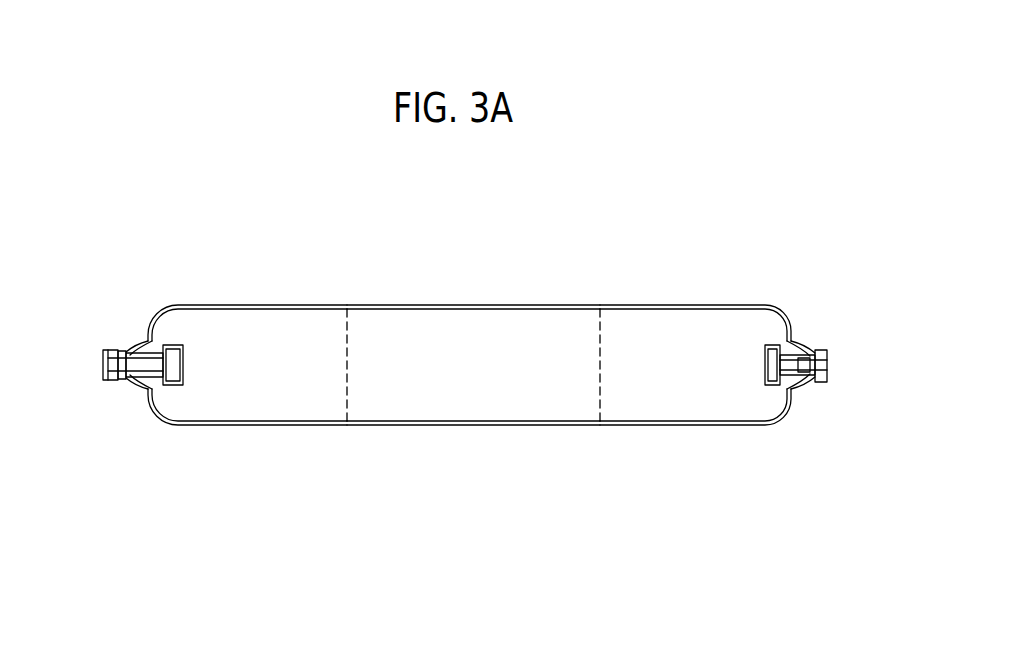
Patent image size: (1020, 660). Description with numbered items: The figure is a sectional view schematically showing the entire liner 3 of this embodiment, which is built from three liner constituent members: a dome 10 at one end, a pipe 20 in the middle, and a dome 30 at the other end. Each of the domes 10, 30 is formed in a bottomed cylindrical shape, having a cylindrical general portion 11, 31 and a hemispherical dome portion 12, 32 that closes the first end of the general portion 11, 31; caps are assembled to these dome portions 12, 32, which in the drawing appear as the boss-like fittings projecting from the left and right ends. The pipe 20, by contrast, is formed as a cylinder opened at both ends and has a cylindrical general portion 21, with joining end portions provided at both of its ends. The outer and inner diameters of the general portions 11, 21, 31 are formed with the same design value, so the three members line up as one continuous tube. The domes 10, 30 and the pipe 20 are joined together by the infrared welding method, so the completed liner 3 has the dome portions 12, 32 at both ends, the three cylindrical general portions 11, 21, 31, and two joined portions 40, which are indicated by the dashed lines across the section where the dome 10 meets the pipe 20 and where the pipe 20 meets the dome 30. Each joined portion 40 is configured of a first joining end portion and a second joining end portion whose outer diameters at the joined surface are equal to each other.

The liner 3 is at (665, 252).
The dome 10 is at (286, 330).
The general portion 11 is at (248, 428).
The dome portion 12 is at (150, 342).
The pipe 20 is at (485, 330).
The general portion 21 is at (470, 428).
The dome 30 is at (715, 335).
The general portion 31 is at (687, 428).
The dome portion 32 is at (805, 348).
The joined portion 40 is at (347, 305).